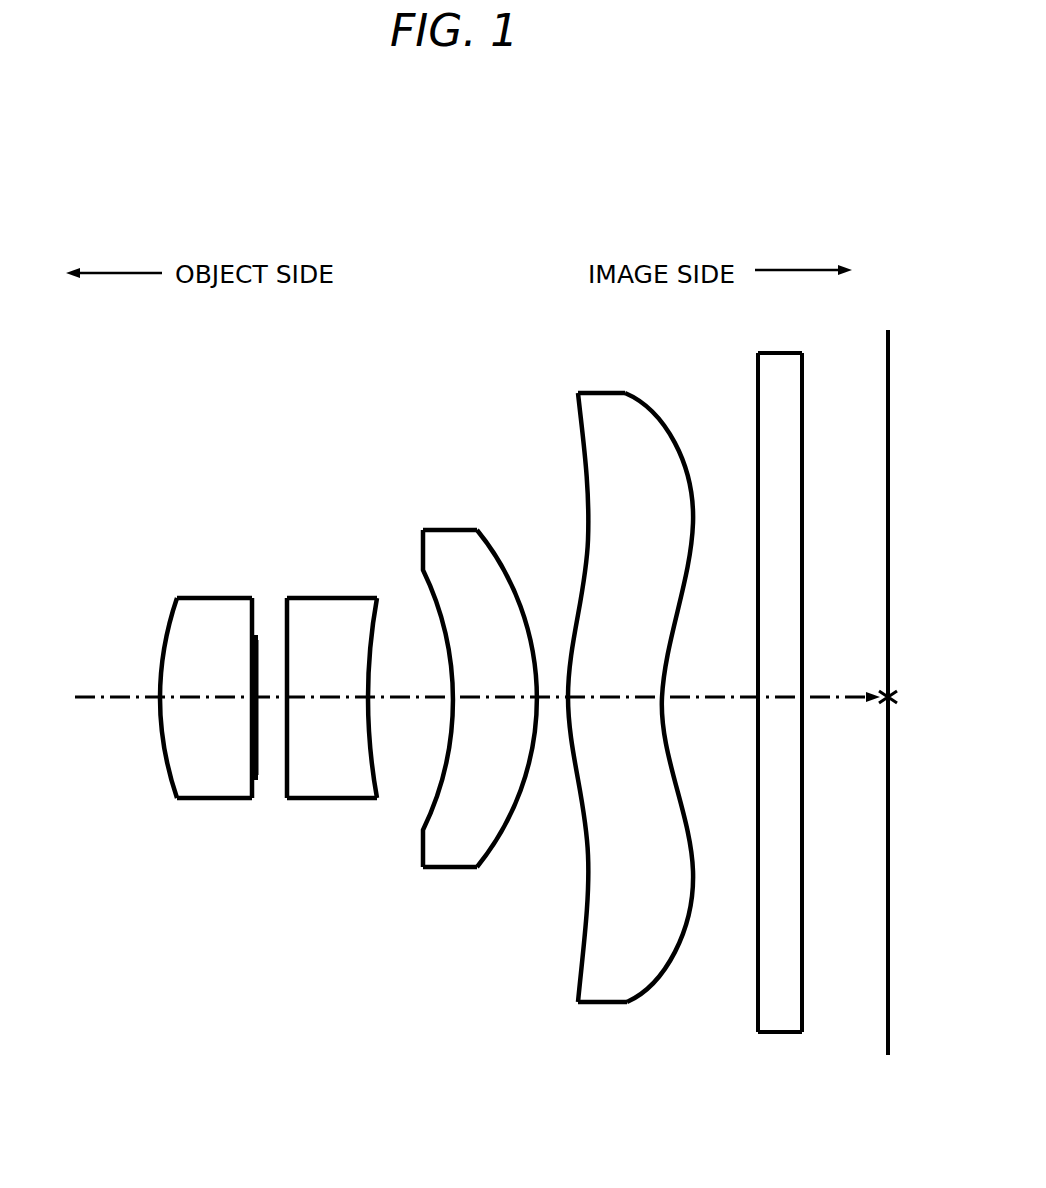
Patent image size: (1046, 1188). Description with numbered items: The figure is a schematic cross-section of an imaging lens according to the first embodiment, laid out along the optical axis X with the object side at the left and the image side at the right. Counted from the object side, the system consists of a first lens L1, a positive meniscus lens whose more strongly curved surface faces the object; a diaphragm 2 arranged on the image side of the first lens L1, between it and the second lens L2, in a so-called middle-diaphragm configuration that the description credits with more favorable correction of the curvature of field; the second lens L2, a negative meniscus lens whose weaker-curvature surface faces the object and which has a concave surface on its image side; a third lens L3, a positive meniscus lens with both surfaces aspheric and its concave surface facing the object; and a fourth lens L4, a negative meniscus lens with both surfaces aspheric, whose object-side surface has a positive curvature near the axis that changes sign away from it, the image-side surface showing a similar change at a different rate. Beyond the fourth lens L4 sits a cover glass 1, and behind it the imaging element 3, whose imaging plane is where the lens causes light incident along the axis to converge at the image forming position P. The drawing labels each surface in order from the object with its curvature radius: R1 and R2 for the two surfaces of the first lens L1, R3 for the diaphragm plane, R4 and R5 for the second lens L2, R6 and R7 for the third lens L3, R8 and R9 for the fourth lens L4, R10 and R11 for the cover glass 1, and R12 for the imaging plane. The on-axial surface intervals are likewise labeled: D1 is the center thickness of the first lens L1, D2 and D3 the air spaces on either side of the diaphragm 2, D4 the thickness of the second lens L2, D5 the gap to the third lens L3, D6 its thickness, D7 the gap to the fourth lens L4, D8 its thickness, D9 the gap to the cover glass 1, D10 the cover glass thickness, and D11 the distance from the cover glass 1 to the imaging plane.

The first lens L1 is at (213, 698).
The second lens L2 is at (351, 661).
The third lens L3 is at (463, 678).
The fourth lens L4 is at (625, 663).
The cover glass 1 is at (790, 728).
The diaphragm 2 is at (288, 706).
The imaging element 3 is at (859, 709).
The optical axis X is at (87, 702).
The image forming position P is at (901, 698).
The curvature radius of first surface R1 is at (170, 777).
The curvature radius of second surface R2 is at (253, 783).
The curvature radius of third surface R3 is at (257, 727).
The curvature radius of fourth surface R4 is at (270, 676).
The curvature radius of fifth surface R5 is at (372, 708).
The curvature radius of sixth surface R6 is at (447, 680).
The curvature radius of seventh surface R7 is at (540, 717).
The curvature radius of eighth surface R8 is at (567, 740).
The curvature radius of ninth surface R9 is at (667, 675).
The curvature radius of tenth surface R10 is at (757, 925).
The curvature radius of eleventh surface R11 is at (803, 533).
The curvature radius of twelfth surface R12 is at (882, 832).
The on-axial surface interval D1 is at (188, 695).
The on-axial surface interval D2 is at (243, 700).
The on-axial surface interval D3 is at (275, 700).
The on-axial surface interval D4 is at (333, 693).
The on-axial surface interval D5 is at (392, 693).
The on-axial surface interval D6 is at (473, 700).
The on-axial surface interval D7 is at (552, 697).
The on-axial surface interval D8 is at (620, 700).
The on-axial surface interval D9 is at (700, 702).
The on-axial surface interval D10 is at (778, 693).
The on-axial surface interval D11 is at (827, 700).